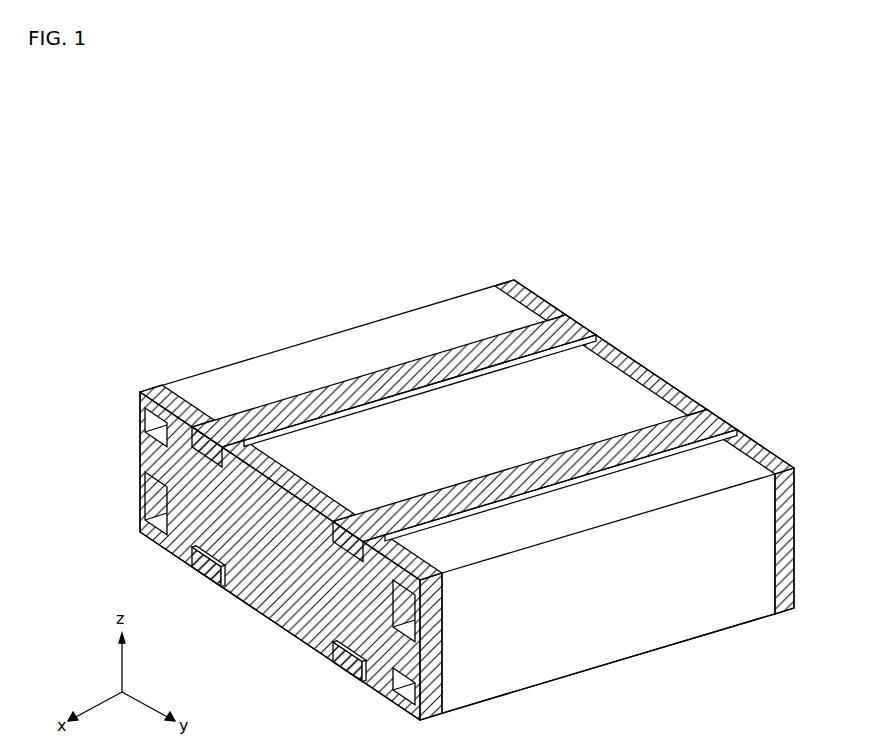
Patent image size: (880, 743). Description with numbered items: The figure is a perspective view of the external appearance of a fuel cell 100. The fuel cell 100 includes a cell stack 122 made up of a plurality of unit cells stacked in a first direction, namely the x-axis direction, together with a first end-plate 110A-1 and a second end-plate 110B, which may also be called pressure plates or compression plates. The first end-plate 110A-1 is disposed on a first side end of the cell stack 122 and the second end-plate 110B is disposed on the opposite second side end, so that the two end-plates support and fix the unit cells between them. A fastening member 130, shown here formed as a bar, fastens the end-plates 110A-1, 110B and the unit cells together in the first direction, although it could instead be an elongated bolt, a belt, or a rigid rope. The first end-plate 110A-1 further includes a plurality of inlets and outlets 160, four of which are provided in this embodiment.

The fuel cell 100 is at (769, 269).
The first end-plate 110A-1 is at (268, 605).
The second end-plate 110B is at (650, 375).
The cell stack 122 is at (600, 650).
The fastening member 130 is at (588, 322).
The inlets and outlets 160 is at (145, 497).